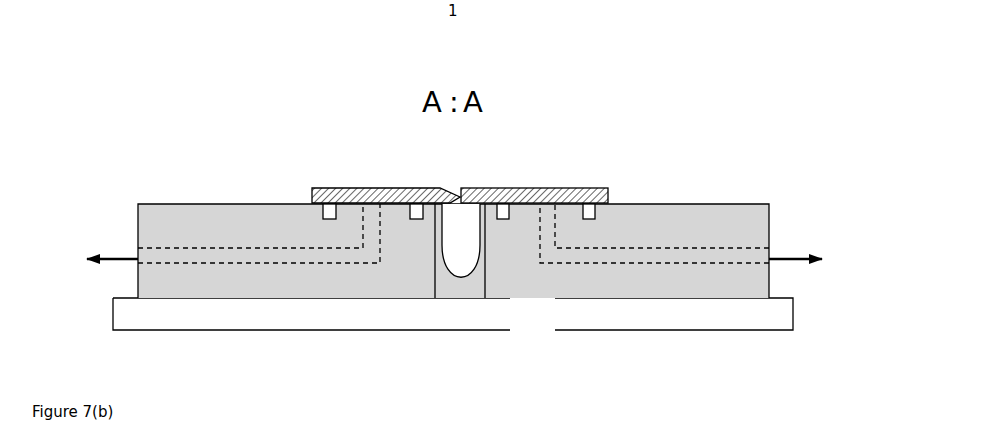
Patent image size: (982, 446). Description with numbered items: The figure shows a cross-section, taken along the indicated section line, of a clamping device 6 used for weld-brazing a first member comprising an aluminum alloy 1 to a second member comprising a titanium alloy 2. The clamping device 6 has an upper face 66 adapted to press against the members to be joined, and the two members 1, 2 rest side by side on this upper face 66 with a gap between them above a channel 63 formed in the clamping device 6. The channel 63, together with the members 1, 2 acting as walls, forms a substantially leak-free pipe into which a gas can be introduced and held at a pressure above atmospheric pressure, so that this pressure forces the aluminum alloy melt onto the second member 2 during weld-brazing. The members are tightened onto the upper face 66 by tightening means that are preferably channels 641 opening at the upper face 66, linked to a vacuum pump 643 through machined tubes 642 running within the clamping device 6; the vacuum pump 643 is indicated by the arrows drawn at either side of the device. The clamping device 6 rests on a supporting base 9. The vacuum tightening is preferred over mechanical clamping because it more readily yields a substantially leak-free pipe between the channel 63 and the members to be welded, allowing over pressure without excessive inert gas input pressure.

The first member comprising an aluminum alloy 1 is at (525, 190).
The second member comprising a titanium alloy 2 is at (388, 188).
The clamping device 6 is at (197, 227).
The substrate 9 is at (165, 315).
The channel 63 is at (465, 232).
The upper face 66 is at (232, 202).
The channels 641 is at (595, 213).
The machined tubes 642 is at (660, 255).
The vacuum pump 643 is at (120, 254).